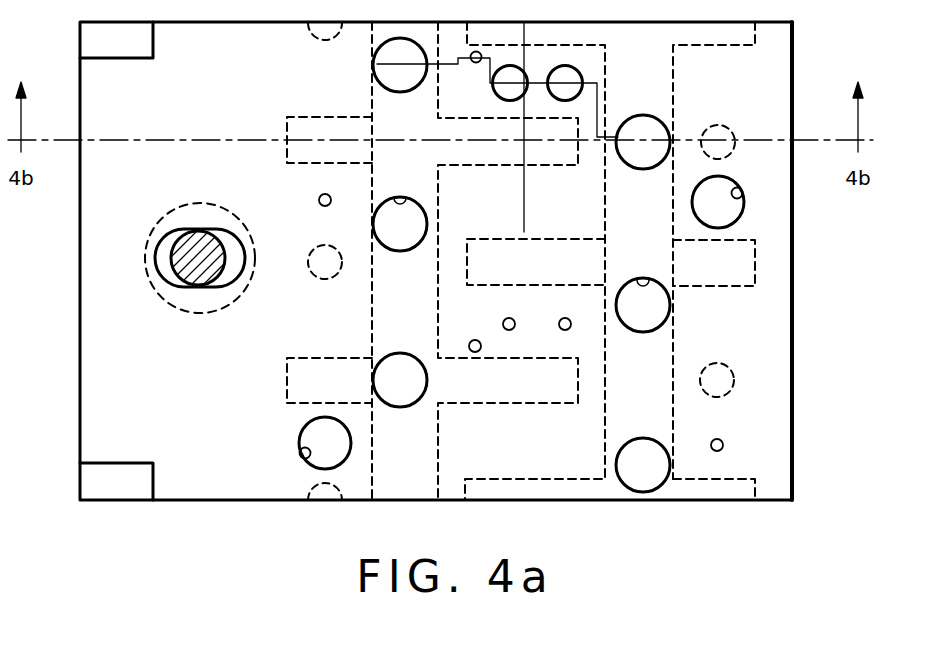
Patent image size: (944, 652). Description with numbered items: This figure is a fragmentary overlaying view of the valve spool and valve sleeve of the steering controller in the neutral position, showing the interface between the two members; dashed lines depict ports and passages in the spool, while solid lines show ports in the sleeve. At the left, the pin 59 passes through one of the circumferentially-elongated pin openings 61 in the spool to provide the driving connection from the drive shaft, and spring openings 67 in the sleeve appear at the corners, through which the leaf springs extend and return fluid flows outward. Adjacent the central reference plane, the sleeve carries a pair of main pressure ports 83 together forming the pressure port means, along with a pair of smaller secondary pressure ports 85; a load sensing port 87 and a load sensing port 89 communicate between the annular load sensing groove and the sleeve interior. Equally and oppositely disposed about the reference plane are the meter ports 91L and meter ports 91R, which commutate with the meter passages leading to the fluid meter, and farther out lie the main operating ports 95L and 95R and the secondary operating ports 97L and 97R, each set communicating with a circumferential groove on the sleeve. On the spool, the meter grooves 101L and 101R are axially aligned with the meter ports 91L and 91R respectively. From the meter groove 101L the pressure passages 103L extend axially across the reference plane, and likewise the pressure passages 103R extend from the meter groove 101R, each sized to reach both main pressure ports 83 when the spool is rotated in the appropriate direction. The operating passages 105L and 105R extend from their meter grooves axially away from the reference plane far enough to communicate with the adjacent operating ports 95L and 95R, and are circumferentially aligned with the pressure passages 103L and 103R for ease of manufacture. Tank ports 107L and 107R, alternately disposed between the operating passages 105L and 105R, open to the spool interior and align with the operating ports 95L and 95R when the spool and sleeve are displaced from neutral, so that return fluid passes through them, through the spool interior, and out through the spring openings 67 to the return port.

The pin 59 is at (200, 278).
The pin openings 61 is at (178, 216).
The spring openings 67 is at (123, 48).
The main pressure ports 83 is at (556, 95).
The secondary pressure ports 85 is at (559, 322).
The load sensing port 87 is at (478, 63).
The load sensing port 89 is at (469, 343).
The meter ports 91L is at (407, 198).
The meter ports 91R is at (641, 280).
The main operating ports 95L is at (300, 450).
The main operating ports 95R is at (741, 190).
The secondary operating ports 97L is at (318, 202).
The secondary operating ports 97R is at (722, 441).
The meter groove 101L is at (406, 313).
The meter groove 101R is at (648, 73).
The pressure passages 103L is at (464, 145).
The pressure passages 103R is at (518, 268).
The operating passages 105L is at (357, 116).
The operating passages 105R is at (698, 268).
The tank ports 107L is at (315, 41).
The tank ports 107R is at (708, 368).